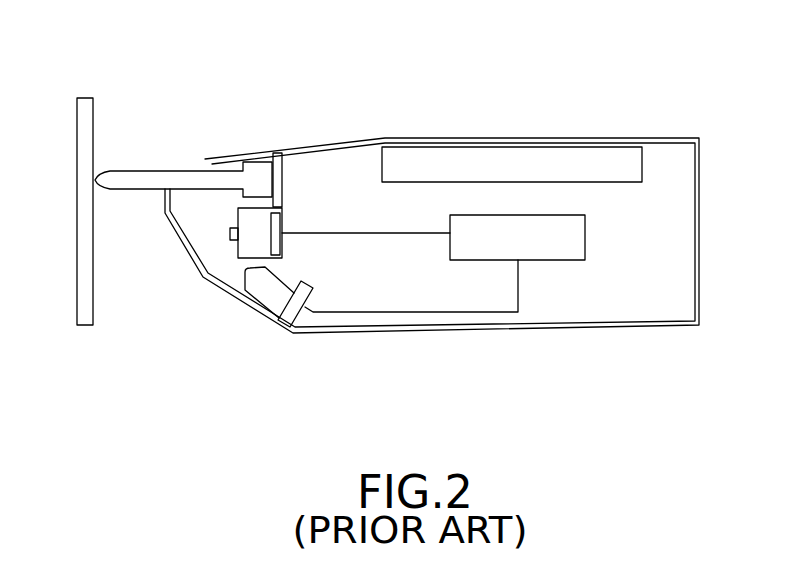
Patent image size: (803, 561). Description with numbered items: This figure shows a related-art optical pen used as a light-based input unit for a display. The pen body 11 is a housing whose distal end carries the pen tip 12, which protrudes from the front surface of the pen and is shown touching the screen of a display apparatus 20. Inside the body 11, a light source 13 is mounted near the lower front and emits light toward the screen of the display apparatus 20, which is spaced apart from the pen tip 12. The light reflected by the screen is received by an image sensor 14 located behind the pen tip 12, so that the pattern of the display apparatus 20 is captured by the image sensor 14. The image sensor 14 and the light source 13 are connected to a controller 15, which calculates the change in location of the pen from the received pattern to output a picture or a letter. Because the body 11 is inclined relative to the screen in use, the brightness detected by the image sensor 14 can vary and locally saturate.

The pen body 11 is at (660, 137).
The pen tip 12 is at (158, 180).
The light source 13 is at (272, 293).
The image sensor 14 is at (280, 230).
The controller 15 is at (587, 237).
The display apparatus 20 is at (82, 327).